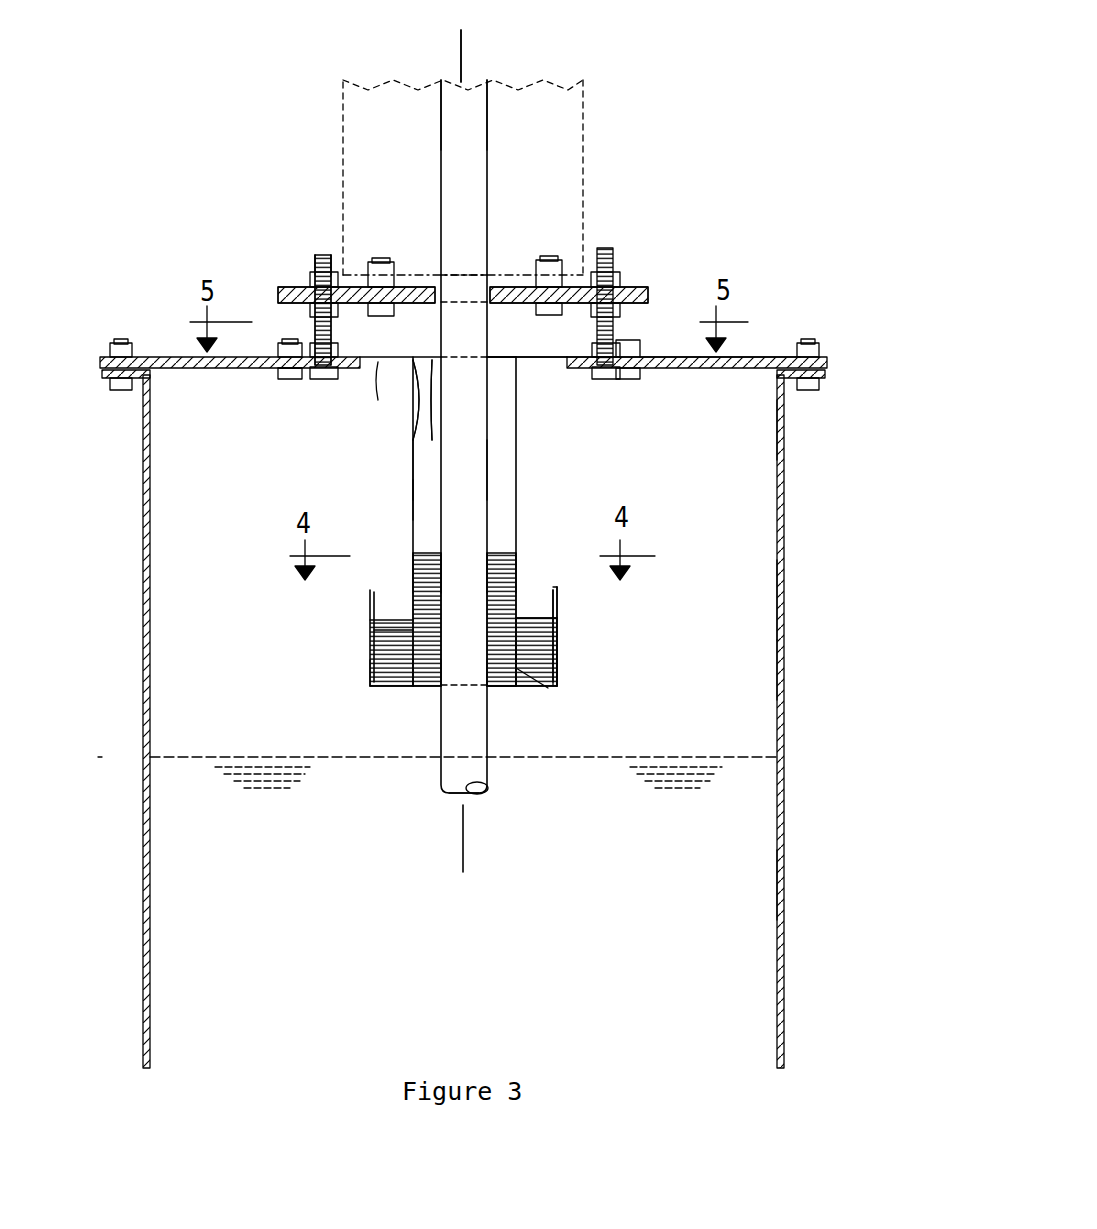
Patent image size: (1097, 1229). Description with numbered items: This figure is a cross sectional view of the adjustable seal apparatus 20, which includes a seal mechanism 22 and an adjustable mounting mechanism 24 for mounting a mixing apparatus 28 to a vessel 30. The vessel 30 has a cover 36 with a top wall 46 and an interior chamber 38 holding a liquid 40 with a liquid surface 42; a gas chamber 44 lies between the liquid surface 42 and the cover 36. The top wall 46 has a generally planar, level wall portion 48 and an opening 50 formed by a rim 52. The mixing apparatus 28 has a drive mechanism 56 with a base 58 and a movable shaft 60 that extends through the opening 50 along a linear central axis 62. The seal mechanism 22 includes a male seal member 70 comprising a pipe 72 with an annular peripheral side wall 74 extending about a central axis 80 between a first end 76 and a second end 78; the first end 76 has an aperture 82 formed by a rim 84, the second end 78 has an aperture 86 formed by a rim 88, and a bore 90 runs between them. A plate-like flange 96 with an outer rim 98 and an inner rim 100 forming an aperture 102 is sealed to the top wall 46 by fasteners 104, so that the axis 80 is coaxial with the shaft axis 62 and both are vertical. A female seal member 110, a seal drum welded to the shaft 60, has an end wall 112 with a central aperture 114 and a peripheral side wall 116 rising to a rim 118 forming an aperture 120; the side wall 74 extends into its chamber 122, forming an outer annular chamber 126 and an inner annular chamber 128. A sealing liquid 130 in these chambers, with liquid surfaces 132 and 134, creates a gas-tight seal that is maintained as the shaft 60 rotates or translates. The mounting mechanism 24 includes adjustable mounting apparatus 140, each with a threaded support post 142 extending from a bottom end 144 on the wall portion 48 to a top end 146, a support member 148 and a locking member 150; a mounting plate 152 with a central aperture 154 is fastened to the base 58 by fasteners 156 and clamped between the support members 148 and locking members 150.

The adjustable seal apparatus 20 is at (802, 238).
The seal mechanism 22 is at (647, 494).
The adjustable mounting mechanism 24 is at (242, 240).
The mixing apparatus 28 is at (686, 57).
The vessel 30 is at (792, 494).
The cover 36 is at (840, 438).
The interior chamber 38 is at (757, 608).
The liquid 40 is at (757, 875).
The liquid surface 42 is at (680, 757).
The gas chamber 44 is at (760, 670).
The top wall 46 is at (777, 352).
The wall portion 48 is at (746, 357).
The opening 50 is at (378, 372).
The rim 52 is at (294, 380).
The drive mechanism 56 is at (590, 101).
The base 58 is at (510, 260).
The movable shaft 60 is at (489, 727).
The central axis 62 is at (470, 836).
The male seal member 70 is at (358, 456).
The pipe 72 is at (408, 527).
The annular peripheral side wall 74 is at (518, 468).
The first end 76 is at (516, 358).
The second end 78 is at (540, 686).
The linear central axis 80 is at (462, 830).
The aperture 82 is at (413, 404).
The rim 84 is at (432, 438).
The aperture 86 is at (430, 690).
The rim 88 is at (413, 690).
The bore 90 is at (414, 491).
The flange 96 is at (548, 362).
The peripheral outer rim 98 is at (660, 358).
The peripheral inner rim 100 is at (508, 380).
The aperture 102 is at (492, 355).
The fasteners 104 is at (292, 372).
The female seal member 110 is at (330, 656).
The end wall 112 is at (383, 690).
The central aperture 114 is at (492, 688).
The peripheral side wall 116 is at (558, 655).
The peripheral rim 118 is at (558, 592).
The aperture 120 is at (537, 592).
The chamber 122 is at (552, 608).
The outer annular chamber 126 is at (385, 660).
The inner annular chamber 128 is at (413, 569).
The sealing liquid 130 is at (542, 636).
The liquid surface 132 is at (392, 642).
The liquid surface 134 is at (506, 558).
The adjustable mounting apparatus 140 is at (652, 248).
The threaded support post 142 is at (323, 255).
The bottom end 144 is at (606, 368).
The top end 146 is at (322, 256).
The support member 148 is at (312, 311).
The locking member 150 is at (332, 282).
The mounting plate 152 is at (280, 290).
The central aperture 154 is at (445, 292).
The fasteners 156 is at (549, 258).